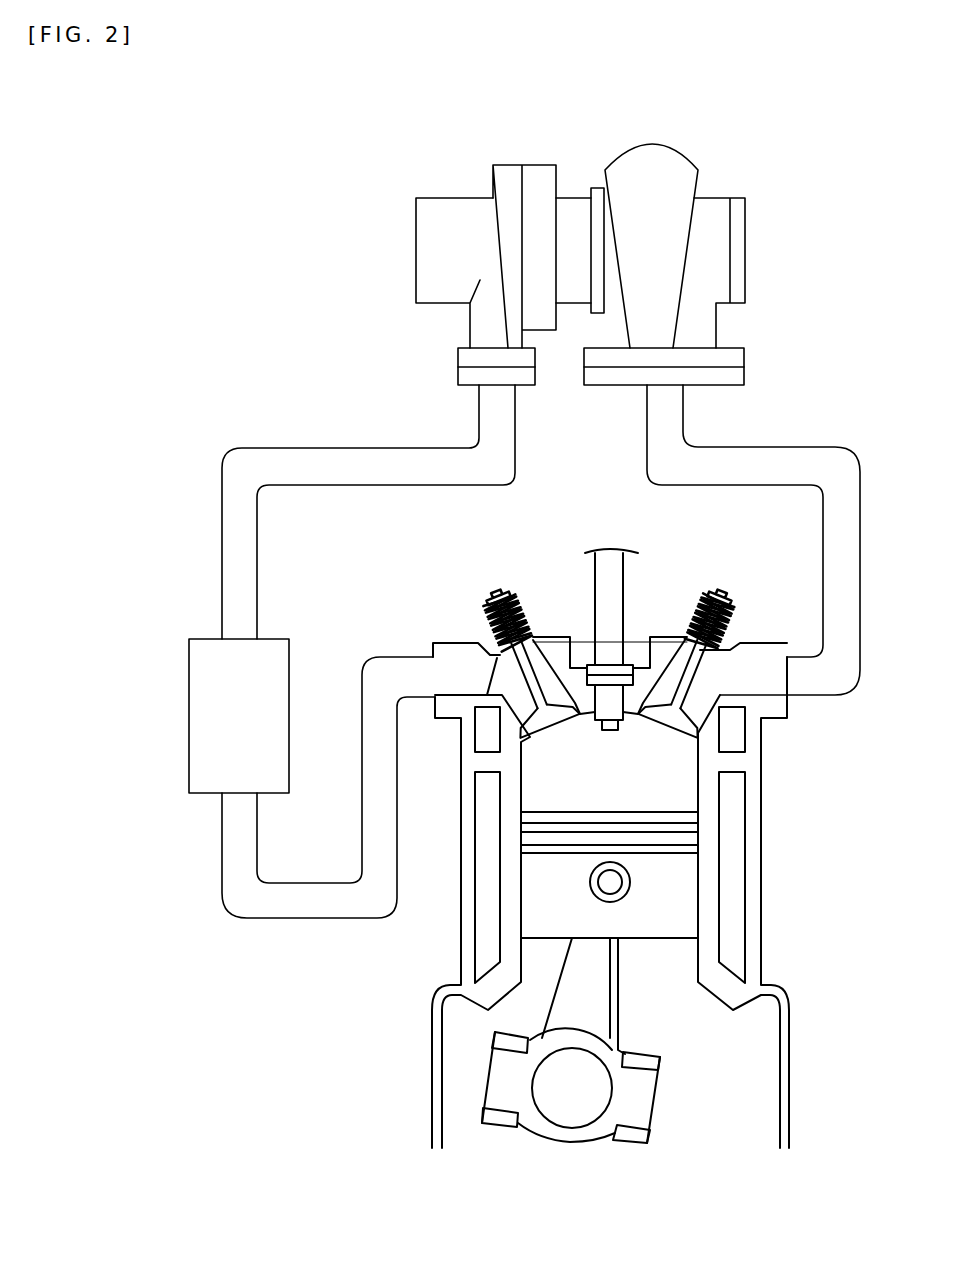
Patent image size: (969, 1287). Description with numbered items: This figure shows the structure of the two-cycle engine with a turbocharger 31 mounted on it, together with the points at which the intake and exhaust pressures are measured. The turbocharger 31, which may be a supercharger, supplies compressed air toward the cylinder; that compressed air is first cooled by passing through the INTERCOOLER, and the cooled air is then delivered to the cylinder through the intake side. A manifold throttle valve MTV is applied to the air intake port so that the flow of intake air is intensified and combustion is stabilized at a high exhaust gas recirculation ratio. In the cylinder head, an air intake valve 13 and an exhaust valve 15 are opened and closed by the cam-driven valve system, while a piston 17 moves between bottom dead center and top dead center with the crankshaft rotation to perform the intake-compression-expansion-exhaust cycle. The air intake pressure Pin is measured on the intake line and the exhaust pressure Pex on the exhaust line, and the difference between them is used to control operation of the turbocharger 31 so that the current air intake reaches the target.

The turbocharger 31 is at (728, 165).
The air intake valve 13 is at (547, 663).
The exhaust valve 15 is at (683, 677).
The piston 17 is at (677, 893).
The manifold throttle valve MTV is at (480, 678).
The air intake pressure Pin is at (288, 910).
The exhaust pressure Pex is at (787, 675).
The intercooler INTERCOOLER is at (200, 645).